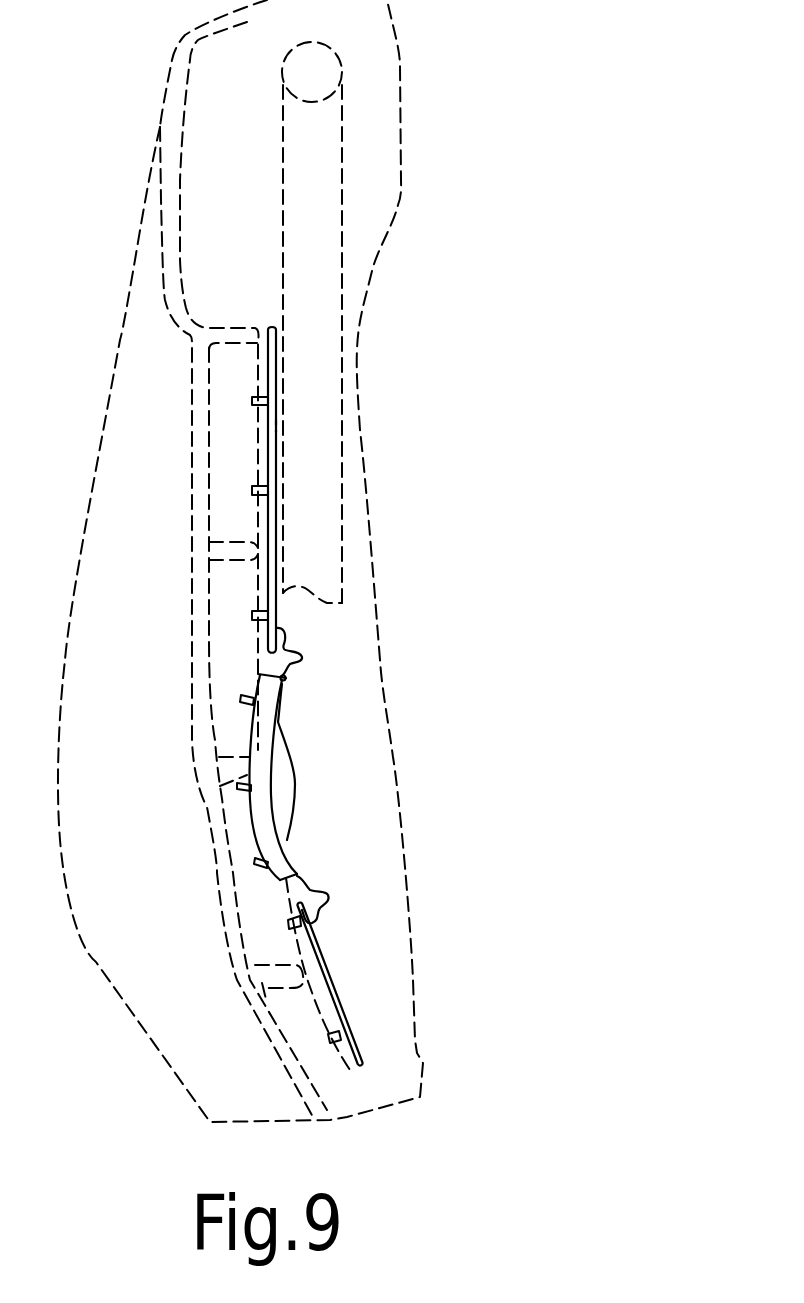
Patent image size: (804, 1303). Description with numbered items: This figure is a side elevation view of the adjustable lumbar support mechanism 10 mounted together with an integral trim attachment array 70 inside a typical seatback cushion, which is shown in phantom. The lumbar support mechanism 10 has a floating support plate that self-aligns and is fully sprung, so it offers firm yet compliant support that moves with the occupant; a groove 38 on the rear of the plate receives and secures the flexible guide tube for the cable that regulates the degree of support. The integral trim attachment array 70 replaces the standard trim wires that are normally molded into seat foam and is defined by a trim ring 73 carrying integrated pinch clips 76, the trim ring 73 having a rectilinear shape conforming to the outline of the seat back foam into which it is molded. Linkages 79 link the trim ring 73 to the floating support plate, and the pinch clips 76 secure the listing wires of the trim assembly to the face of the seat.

The adjustable lumbar support mechanism 10 is at (300, 724).
The groove 38 is at (292, 778).
The integral trim attachment array 70 is at (271, 327).
The trim ring 73 is at (276, 426).
The pinch clips 76 is at (252, 490).
The linkages 79 is at (328, 888).